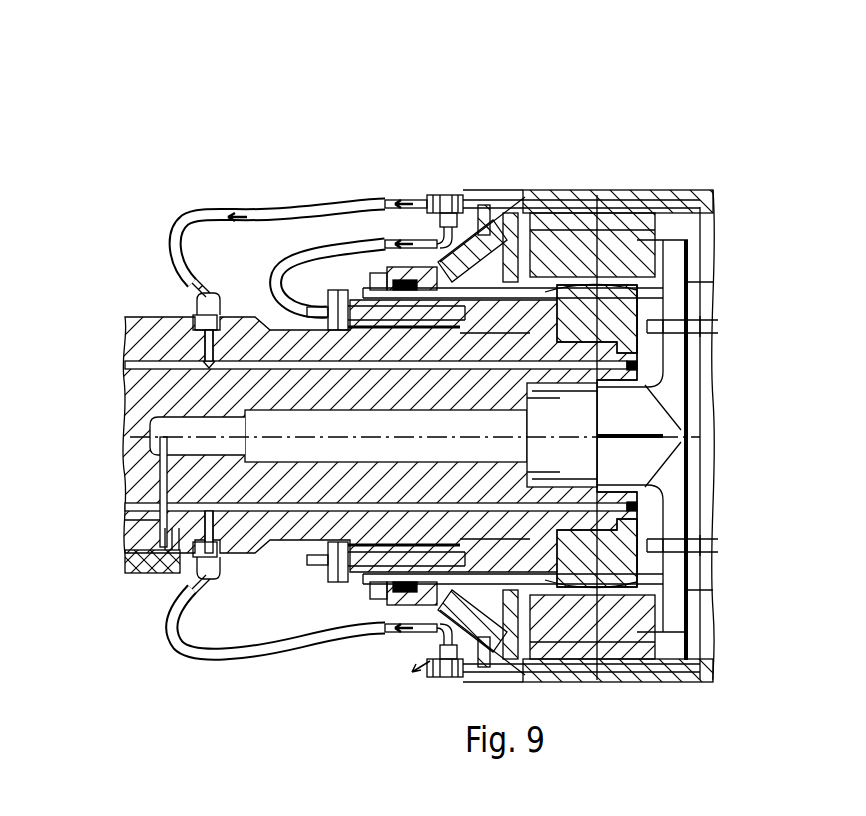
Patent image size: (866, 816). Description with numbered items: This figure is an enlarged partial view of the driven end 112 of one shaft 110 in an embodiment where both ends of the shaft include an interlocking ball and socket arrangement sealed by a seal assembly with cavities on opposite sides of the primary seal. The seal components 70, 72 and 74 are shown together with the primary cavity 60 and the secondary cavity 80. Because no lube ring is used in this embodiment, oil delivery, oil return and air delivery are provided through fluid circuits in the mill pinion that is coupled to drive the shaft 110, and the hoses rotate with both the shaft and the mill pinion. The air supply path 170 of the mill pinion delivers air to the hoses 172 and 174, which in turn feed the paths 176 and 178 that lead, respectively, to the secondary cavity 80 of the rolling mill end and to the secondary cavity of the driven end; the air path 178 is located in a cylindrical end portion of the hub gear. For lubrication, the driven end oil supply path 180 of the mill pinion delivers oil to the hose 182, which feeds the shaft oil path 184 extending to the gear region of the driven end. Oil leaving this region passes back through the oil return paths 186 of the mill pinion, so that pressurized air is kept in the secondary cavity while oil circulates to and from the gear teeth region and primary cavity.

The primary cavity 60 is at (513, 205).
The seal component 70 is at (575, 192).
The seal component 72 is at (400, 262).
The seal component 74 is at (478, 205).
The secondary cavity 80 is at (435, 230).
The shaft 110 is at (160, 337).
The driven end 112 is at (528, 114).
The air supply path 170 is at (718, 210).
The hose 172 is at (262, 212).
The hose 174 is at (290, 263).
The air path 176 is at (148, 323).
The air path 178 is at (367, 300).
The driven end oil supply path 180 is at (712, 668).
The hose 182 is at (323, 637).
The shaft oil path 184 is at (215, 533).
The oil return path 186 is at (730, 332).